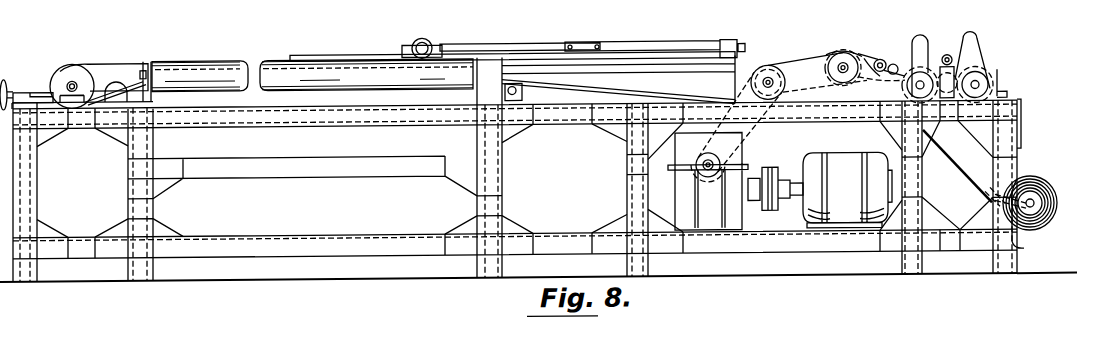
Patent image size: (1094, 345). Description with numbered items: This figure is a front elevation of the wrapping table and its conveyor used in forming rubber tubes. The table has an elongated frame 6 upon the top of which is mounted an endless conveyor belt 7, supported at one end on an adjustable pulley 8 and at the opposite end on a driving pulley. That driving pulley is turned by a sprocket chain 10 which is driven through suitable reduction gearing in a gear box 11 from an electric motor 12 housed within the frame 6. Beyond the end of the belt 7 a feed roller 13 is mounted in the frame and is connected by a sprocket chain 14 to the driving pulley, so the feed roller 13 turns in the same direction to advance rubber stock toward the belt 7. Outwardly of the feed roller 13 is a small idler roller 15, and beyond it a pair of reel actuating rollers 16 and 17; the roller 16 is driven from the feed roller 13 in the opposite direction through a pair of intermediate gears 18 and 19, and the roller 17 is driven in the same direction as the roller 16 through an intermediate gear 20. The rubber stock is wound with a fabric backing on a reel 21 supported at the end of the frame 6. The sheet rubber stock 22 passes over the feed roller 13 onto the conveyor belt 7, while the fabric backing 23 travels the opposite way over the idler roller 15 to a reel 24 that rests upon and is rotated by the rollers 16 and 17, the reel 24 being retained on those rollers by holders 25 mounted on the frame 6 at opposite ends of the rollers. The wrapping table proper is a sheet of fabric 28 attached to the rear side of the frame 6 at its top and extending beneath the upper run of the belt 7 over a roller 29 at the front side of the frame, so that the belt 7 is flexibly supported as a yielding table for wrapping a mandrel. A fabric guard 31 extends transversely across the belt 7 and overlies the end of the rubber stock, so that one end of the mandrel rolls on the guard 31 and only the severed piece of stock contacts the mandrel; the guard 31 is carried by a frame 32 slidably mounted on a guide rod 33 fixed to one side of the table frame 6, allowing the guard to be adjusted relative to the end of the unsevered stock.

The frame 6 is at (497, 211).
The endless conveyor belt 7 is at (110, 66).
The adjustable pulley 8 is at (68, 72).
The sprocket chain 10 is at (750, 152).
The gear box 11 is at (752, 165).
The electric motor 12 is at (847, 190).
The feed roller 13 is at (828, 84).
The sprocket chain 14 is at (812, 60).
The idler roller 15 is at (878, 66).
The reel actuating roller 16 is at (947, 63).
The reel actuating roller 17 is at (990, 93).
The intermediate gear 18 is at (866, 65).
The intermediate gear 19 is at (891, 72).
The intermediate gear 20 is at (964, 168).
The reel 21 is at (1031, 207).
The sheet rubber stock 22 is at (830, 57).
The fabric backing 23 is at (914, 44).
The reel 24 is at (969, 42).
The holders 25 is at (998, 78).
The sheet of fabric 28 is at (312, 96).
The roller 29 is at (152, 63).
The fabric guard 31 is at (290, 60).
The frame 32 is at (488, 50).
The guide rod 33 is at (630, 49).